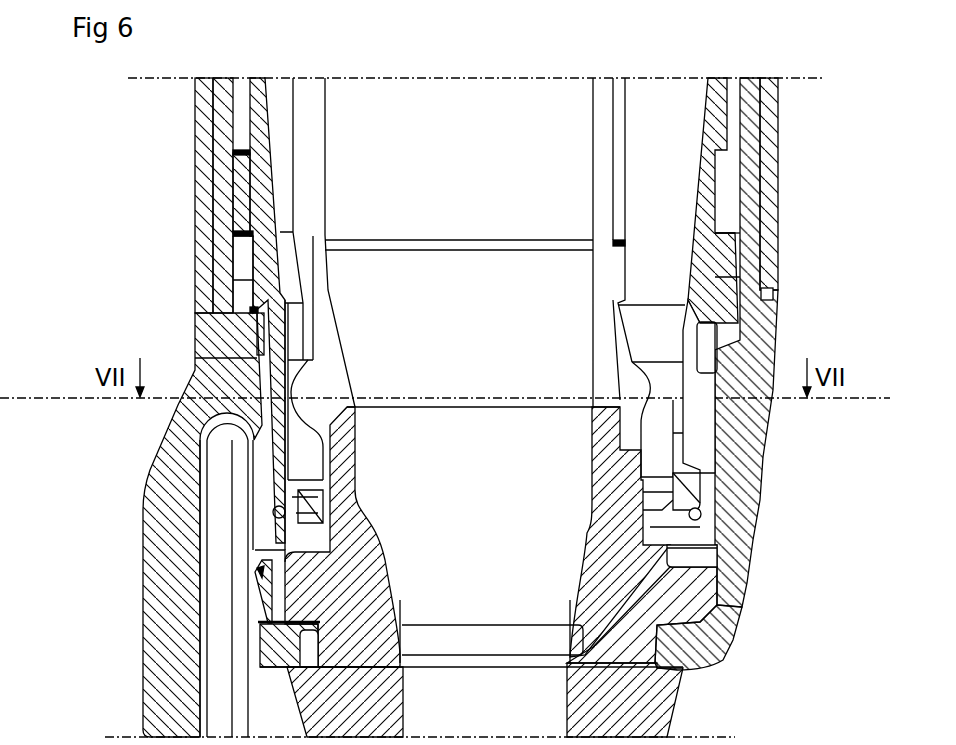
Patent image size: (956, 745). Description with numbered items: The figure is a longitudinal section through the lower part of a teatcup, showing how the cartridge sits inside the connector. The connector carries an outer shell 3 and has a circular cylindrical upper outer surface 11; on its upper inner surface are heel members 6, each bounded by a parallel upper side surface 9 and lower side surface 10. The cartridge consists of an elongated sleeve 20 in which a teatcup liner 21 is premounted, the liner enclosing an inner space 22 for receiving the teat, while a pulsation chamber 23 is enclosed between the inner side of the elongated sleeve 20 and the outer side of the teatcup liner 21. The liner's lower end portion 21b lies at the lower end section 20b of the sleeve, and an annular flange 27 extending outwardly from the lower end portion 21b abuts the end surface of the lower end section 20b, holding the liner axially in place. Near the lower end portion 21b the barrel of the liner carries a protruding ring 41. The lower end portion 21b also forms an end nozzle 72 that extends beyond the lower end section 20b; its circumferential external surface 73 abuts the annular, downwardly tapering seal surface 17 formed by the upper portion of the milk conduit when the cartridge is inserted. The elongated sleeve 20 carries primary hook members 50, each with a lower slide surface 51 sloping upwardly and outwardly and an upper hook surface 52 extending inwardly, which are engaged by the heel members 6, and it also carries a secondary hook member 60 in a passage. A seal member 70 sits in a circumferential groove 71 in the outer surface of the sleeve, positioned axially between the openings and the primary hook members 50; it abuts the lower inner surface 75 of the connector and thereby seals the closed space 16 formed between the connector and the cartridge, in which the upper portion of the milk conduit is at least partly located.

The outer shell 3 is at (202, 92).
The upper side surface 9 is at (232, 151).
The heel member 6 is at (237, 185).
The lower side surface 10 is at (230, 253).
The secondary hook member 60 is at (240, 265).
The lower slide surface 51 is at (228, 280).
The upper hook surface 52 is at (250, 312).
The seal member 70 is at (230, 356).
The protruding ring 41 is at (248, 428).
The seal surface 17 is at (350, 567).
The inner space 22 is at (460, 188).
The pulsation chamber 23 is at (678, 128).
The upper outer surface 11 is at (767, 112).
The elongated sleeve 20 is at (713, 132).
The teatcup liner 21 is at (603, 157).
The primary hook member 50 is at (740, 235).
The circumferential groove 71 is at (773, 300).
The lower inner surface 75 is at (690, 408).
The closed space 16 is at (703, 457).
The lower end section 20b is at (706, 493).
The annular flange 27 is at (700, 516).
The lower end portion 21b is at (672, 547).
The end nozzle 72 is at (620, 567).
The circumferential external surface 73 is at (700, 610).